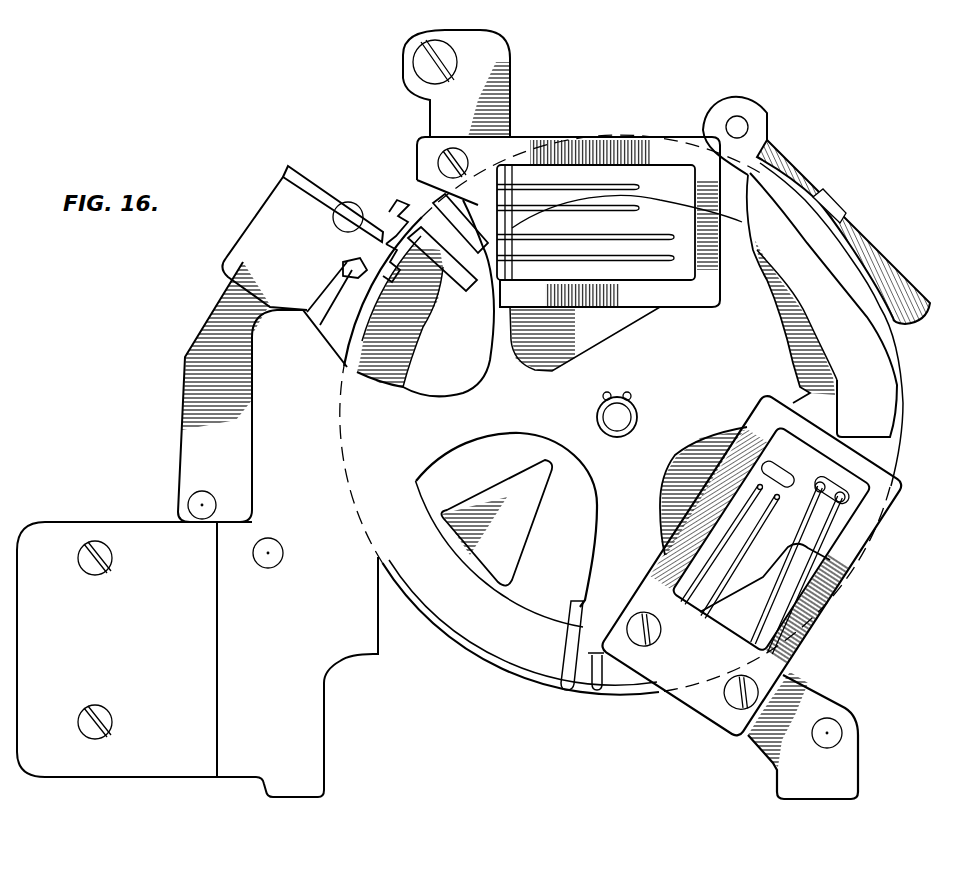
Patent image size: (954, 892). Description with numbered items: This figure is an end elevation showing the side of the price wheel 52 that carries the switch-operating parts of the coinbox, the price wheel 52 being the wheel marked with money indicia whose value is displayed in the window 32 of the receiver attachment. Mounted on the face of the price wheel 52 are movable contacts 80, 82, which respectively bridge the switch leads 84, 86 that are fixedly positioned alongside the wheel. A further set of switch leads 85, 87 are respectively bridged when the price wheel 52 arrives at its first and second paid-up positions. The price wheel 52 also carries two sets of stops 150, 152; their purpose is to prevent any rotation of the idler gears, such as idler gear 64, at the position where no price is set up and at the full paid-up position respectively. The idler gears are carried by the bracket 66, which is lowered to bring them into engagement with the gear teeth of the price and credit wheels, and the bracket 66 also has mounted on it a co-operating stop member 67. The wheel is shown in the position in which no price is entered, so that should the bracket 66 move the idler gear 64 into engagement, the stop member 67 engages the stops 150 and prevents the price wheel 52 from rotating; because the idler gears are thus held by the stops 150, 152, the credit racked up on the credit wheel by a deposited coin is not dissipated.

The window 32 is at (830, 207).
The price wheel 52 is at (485, 664).
The idler gear 64 is at (355, 267).
The bracket 66 is at (183, 428).
The stop member 67 is at (383, 222).
The movable contact 80 is at (838, 487).
The movable contact 82 is at (770, 462).
The switch leads 84 is at (588, 208).
The switch leads 85 is at (832, 512).
The switch leads 86 is at (660, 258).
The switch leads 87 is at (705, 566).
The stops 150 is at (440, 252).
The stops 152 is at (597, 692).